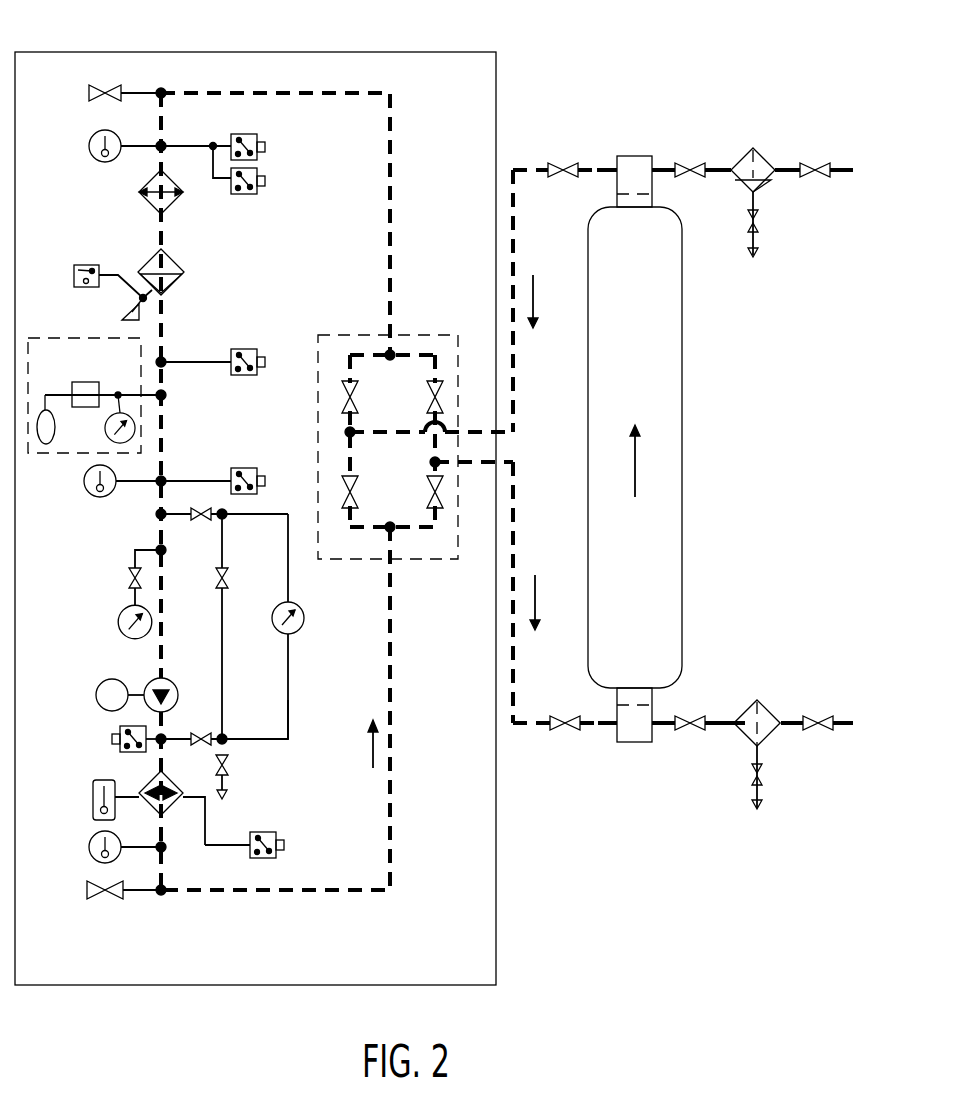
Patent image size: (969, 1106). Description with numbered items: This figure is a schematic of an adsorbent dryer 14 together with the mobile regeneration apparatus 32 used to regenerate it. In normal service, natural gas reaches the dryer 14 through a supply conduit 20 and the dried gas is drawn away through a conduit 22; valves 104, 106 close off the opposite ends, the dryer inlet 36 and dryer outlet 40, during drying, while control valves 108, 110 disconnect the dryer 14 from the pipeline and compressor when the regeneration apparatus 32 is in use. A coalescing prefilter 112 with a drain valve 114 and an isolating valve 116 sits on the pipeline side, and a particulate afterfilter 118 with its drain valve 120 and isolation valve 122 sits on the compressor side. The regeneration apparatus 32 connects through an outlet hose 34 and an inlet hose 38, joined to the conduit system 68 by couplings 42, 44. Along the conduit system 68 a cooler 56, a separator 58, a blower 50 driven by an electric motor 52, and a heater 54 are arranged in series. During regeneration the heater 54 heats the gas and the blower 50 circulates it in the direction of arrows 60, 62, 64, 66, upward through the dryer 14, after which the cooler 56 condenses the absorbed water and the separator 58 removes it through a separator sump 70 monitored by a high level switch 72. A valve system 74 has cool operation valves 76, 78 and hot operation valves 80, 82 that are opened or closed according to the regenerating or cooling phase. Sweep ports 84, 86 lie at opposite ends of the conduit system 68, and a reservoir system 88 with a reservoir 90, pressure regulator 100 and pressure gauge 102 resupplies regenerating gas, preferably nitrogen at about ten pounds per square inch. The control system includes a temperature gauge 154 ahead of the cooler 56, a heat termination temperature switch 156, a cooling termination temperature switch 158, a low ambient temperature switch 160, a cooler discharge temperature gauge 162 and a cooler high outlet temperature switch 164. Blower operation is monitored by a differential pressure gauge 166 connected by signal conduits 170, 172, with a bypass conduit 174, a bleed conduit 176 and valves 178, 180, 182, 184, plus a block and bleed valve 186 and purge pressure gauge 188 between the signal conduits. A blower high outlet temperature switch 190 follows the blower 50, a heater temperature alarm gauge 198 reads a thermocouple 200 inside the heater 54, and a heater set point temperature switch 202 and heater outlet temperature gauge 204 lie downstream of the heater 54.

The dryer 14 is at (702, 347).
The supply conduit 20 is at (790, 166).
The conduit 22 is at (720, 722).
The mobile regeneration apparatus 32 is at (342, 52).
The outlet hose 34 is at (518, 520).
The dryer inlet 36 is at (630, 156).
The inlet hose 38 is at (516, 264).
The dryer outlet 40 is at (636, 742).
The coupling 42 is at (494, 466).
The coupling 44 is at (514, 436).
The blower 50 is at (176, 687).
The electric motor 52 is at (96, 695).
The heater 54 is at (172, 782).
The cooler 56 is at (176, 200).
The separator 58 is at (180, 275).
The arrow 60 is at (370, 758).
The arrow 62 is at (536, 594).
The arrow 64 is at (636, 470).
The arrow 66 is at (534, 294).
The conduit system 68 is at (392, 175).
The separator sump 70 is at (122, 314).
The separator sump high level switch 72 is at (74, 272).
The valve system 74 is at (366, 335).
The cool operation valve 76 is at (358, 488).
The cool operation valve 78 is at (445, 404).
The hot operation valve 80 is at (425, 492).
The hot operation valve 82 is at (358, 410).
The sweep port 84 is at (112, 87).
The sweep port 86 is at (112, 898).
The reservoir system 88 is at (66, 344).
The reservoir 90 is at (52, 446).
The pressure regulator 100 is at (80, 382).
The pressure gauge 102 is at (135, 428).
The valve 104 is at (560, 162).
The valve 106 is at (564, 732).
The control valve 108 is at (686, 162).
The control valve 110 is at (686, 732).
The coalescing prefilter 112 is at (744, 156).
The drain valve 114 is at (764, 224).
The valve 116 is at (818, 180).
The particulate afterfilter 118 is at (770, 712).
The drain valve 120 is at (762, 772).
The isolation valve 122 is at (820, 732).
The temperature gauge 154 is at (92, 134).
The heat termination temperature switch 156 is at (260, 136).
The cooling termination temperature switch 158 is at (266, 183).
The low ambient temperature switch 160 is at (264, 328).
The cooler discharge temperature gauge 162 is at (100, 497).
The cooler high outlet temperature switch 164 is at (244, 468).
The differential pressure gauge 166 is at (304, 618).
The signal conduit 170 is at (258, 516).
The signal conduit 172 is at (290, 744).
The conduit 174 is at (224, 722).
The conduit 176 is at (232, 797).
The valve 178 is at (200, 520).
The valve 180 is at (230, 580).
The valve 182 is at (201, 731).
The valve 184 is at (232, 768).
The block and bleed valve 186 is at (126, 578).
The purge pressure gauge 188 is at (118, 628).
The blower high outlet temperature switch 190 is at (110, 740).
The heater temperature alarm gauge 198 is at (93, 798).
The thermocouple 200 is at (185, 800).
The heater set point temperature switch 202 is at (284, 845).
The heater outlet temperature gauge 204 is at (92, 860).